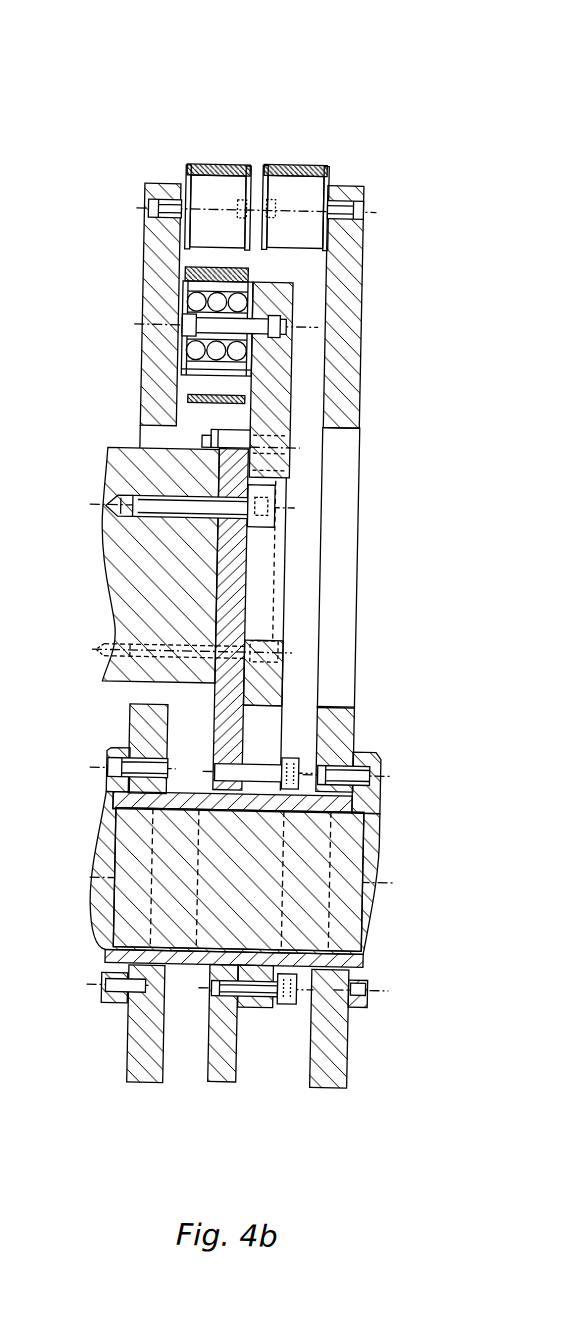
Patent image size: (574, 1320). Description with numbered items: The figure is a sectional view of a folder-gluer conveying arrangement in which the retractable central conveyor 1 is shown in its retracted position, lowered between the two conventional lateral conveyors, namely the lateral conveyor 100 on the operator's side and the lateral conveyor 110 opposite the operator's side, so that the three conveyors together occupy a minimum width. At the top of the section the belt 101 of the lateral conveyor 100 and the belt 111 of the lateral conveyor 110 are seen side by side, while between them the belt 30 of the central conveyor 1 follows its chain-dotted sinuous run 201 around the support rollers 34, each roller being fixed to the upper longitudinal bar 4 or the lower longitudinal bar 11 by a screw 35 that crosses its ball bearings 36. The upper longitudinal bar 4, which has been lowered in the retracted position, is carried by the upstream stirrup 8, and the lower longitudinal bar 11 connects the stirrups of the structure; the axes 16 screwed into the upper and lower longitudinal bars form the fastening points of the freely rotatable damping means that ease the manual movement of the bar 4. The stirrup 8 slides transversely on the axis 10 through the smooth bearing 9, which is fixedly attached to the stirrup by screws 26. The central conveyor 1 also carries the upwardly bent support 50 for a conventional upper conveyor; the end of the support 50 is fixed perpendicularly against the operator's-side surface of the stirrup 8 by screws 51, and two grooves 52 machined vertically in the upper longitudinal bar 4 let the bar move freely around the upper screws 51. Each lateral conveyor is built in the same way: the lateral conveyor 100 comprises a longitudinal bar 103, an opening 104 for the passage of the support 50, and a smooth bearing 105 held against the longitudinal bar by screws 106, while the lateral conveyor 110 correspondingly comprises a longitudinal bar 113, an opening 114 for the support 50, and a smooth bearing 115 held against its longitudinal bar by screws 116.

The retractable central conveyor 1 is at (296, 317).
The upper longitudinal bar 4 is at (272, 407).
The stirrup 8 is at (260, 623).
The smooth bearing 9 is at (189, 958).
The axis 10 is at (128, 917).
The lower longitudinal bar 11 is at (271, 562).
The axes 16 is at (203, 444).
The screws 26 is at (289, 1001).
The belt 30 is at (129, 326).
The sinuous run 201 is at (190, 273).
The support rollers 34 is at (193, 284).
The screw 35 is at (194, 328).
The ball bearings 36 is at (190, 303).
The upwardly bent support 50 is at (146, 589).
The screws 51 is at (147, 510).
The grooves 52 is at (281, 717).
The lateral conveyor 100 is at (172, 141).
The belt 101 is at (209, 163).
The longitudinal bar 103 is at (160, 363).
The opening 104 is at (149, 700).
The smooth bearing 105 is at (126, 802).
The screws 106 is at (120, 769).
The lateral conveyor 110 is at (322, 140).
The belt 111 is at (283, 164).
The longitudinal bar 113 is at (342, 340).
The opening 114 is at (335, 478).
The smooth bearing 115 is at (370, 801).
The screws 116 is at (369, 775).